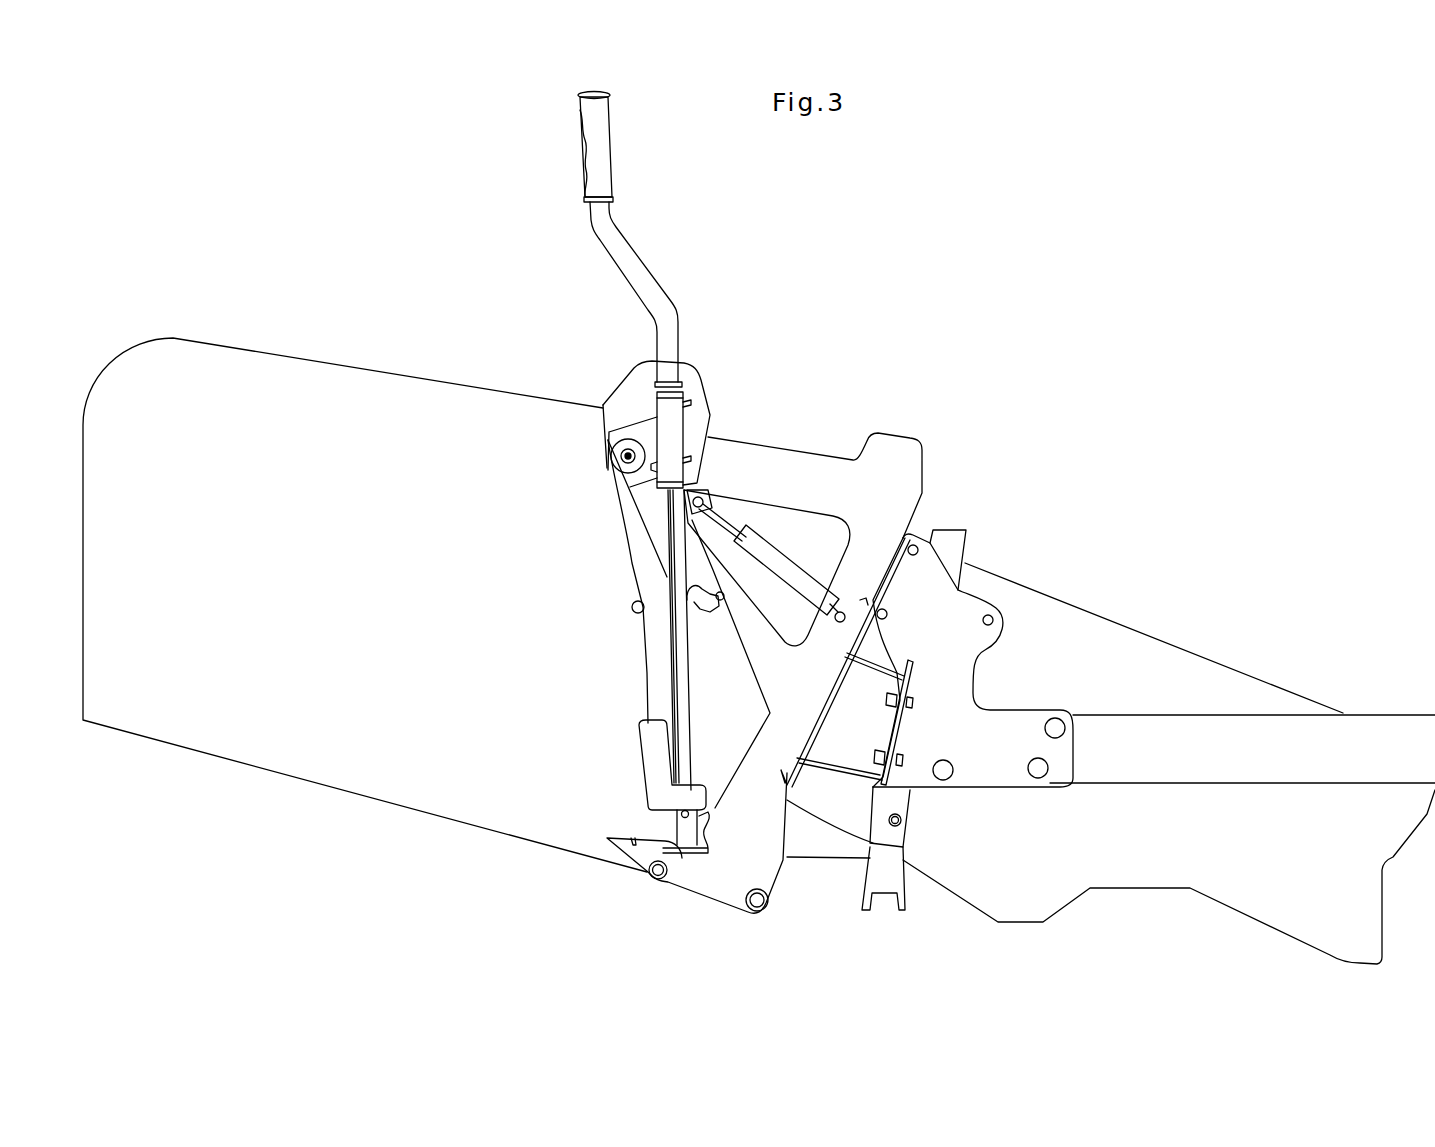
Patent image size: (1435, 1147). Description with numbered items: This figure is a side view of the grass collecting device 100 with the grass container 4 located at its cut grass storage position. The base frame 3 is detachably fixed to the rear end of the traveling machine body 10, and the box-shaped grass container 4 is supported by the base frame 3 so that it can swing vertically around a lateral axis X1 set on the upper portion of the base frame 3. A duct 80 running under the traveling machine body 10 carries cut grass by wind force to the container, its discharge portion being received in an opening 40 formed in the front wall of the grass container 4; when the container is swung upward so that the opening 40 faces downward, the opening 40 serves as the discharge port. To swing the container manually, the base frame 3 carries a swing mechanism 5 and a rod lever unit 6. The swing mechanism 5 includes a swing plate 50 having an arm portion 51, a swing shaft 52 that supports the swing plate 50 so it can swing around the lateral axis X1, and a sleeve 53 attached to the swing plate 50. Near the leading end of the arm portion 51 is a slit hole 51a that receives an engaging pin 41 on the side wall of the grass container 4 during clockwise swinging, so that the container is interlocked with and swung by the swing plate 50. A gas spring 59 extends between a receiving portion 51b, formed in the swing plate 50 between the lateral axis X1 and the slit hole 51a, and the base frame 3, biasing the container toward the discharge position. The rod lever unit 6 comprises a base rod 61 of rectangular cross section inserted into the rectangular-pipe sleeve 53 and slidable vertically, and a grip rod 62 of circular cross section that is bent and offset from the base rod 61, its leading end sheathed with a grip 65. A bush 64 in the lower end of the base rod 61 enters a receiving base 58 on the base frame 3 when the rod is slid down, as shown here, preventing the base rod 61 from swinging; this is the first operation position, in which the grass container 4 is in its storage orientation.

The grass collecting device 100 is at (362, 263).
The grass container 4 is at (297, 343).
The base frame 3 is at (817, 436).
The swing mechanism 5 is at (602, 371).
The rod lever unit 6 is at (602, 469).
The grip rod 62 is at (617, 248).
The grip 65 is at (597, 135).
The base rod 61 is at (667, 675).
The swing plate 50 is at (689, 394).
The sleeve 53 is at (673, 431).
The lateral axis X1 is at (618, 454).
The swing shaft 52 is at (624, 466).
The arm portion 51 is at (650, 508).
The slit hole 51a is at (690, 607).
The receiving portion 51b is at (703, 493).
The gas spring 59 is at (773, 570).
The engaging pin 41 is at (632, 607).
The bush 64 is at (680, 827).
The receiving base 58 is at (701, 818).
The opening 40 is at (887, 590).
The duct 80 is at (1148, 620).
The traveling machine body 10 is at (1378, 696).